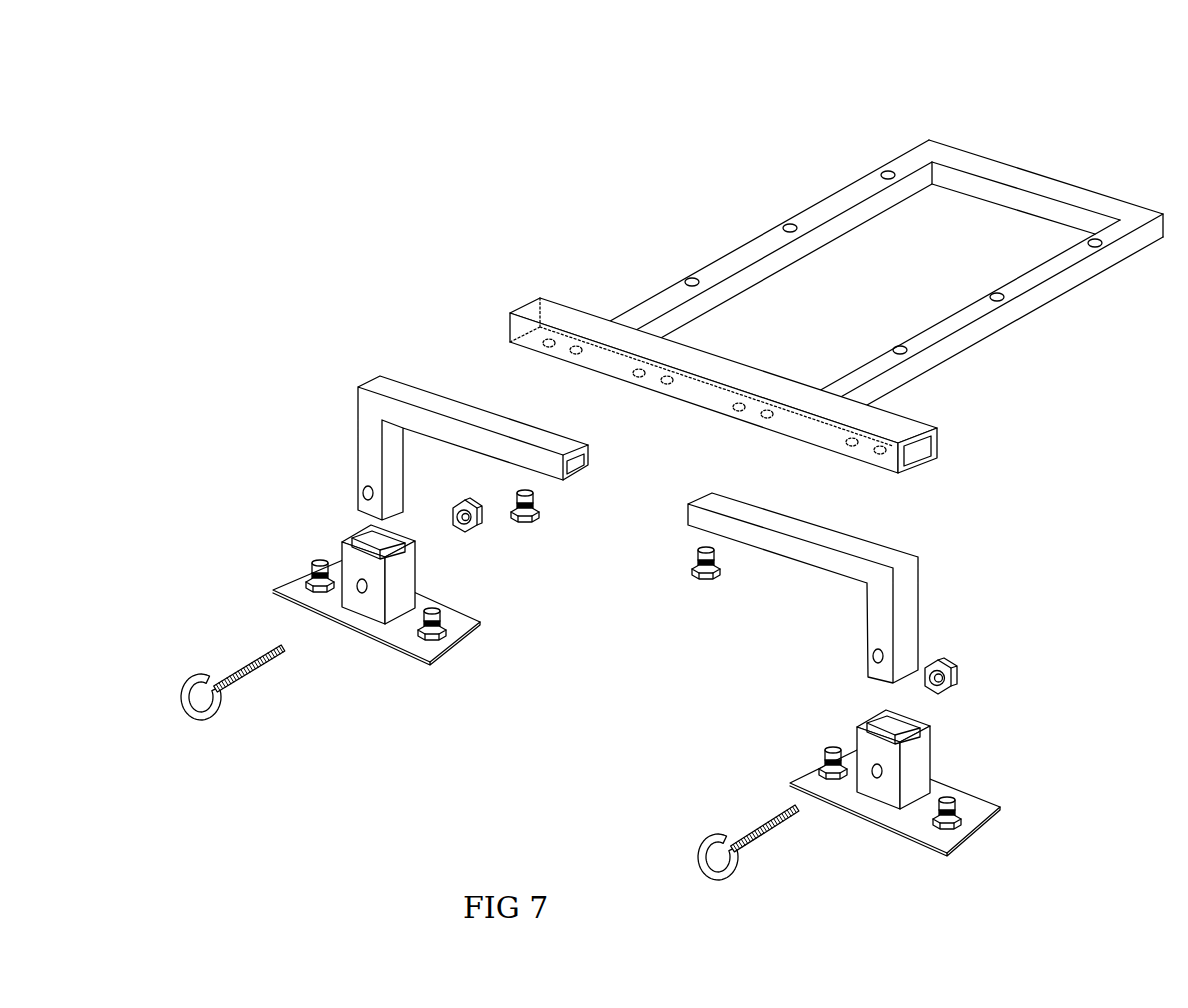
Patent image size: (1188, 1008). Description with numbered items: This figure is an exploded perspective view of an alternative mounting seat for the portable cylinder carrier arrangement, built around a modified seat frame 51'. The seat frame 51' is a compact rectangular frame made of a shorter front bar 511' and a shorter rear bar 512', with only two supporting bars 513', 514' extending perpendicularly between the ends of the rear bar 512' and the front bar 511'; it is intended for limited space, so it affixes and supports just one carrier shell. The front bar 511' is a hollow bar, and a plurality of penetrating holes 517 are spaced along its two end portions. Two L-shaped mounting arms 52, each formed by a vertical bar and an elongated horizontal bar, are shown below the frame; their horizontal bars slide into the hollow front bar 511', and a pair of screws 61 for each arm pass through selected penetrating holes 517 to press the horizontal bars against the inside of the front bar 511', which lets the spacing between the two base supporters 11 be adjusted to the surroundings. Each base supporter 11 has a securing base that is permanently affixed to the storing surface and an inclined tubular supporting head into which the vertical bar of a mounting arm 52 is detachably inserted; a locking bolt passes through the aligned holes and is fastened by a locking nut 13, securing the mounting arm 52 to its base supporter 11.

The modified seat frame 51' is at (840, 286).
The front bar 511' is at (723, 407).
The rear bar 512' is at (1046, 183).
The supporting bar 513' is at (753, 249).
The supporting bar 514' is at (989, 326).
The penetrating hole 517 is at (880, 453).
The mounting arm 52 is at (363, 367).
The screw 61 is at (533, 517).
The locking nut 13 is at (960, 670).
The base supporter 11 is at (450, 672).